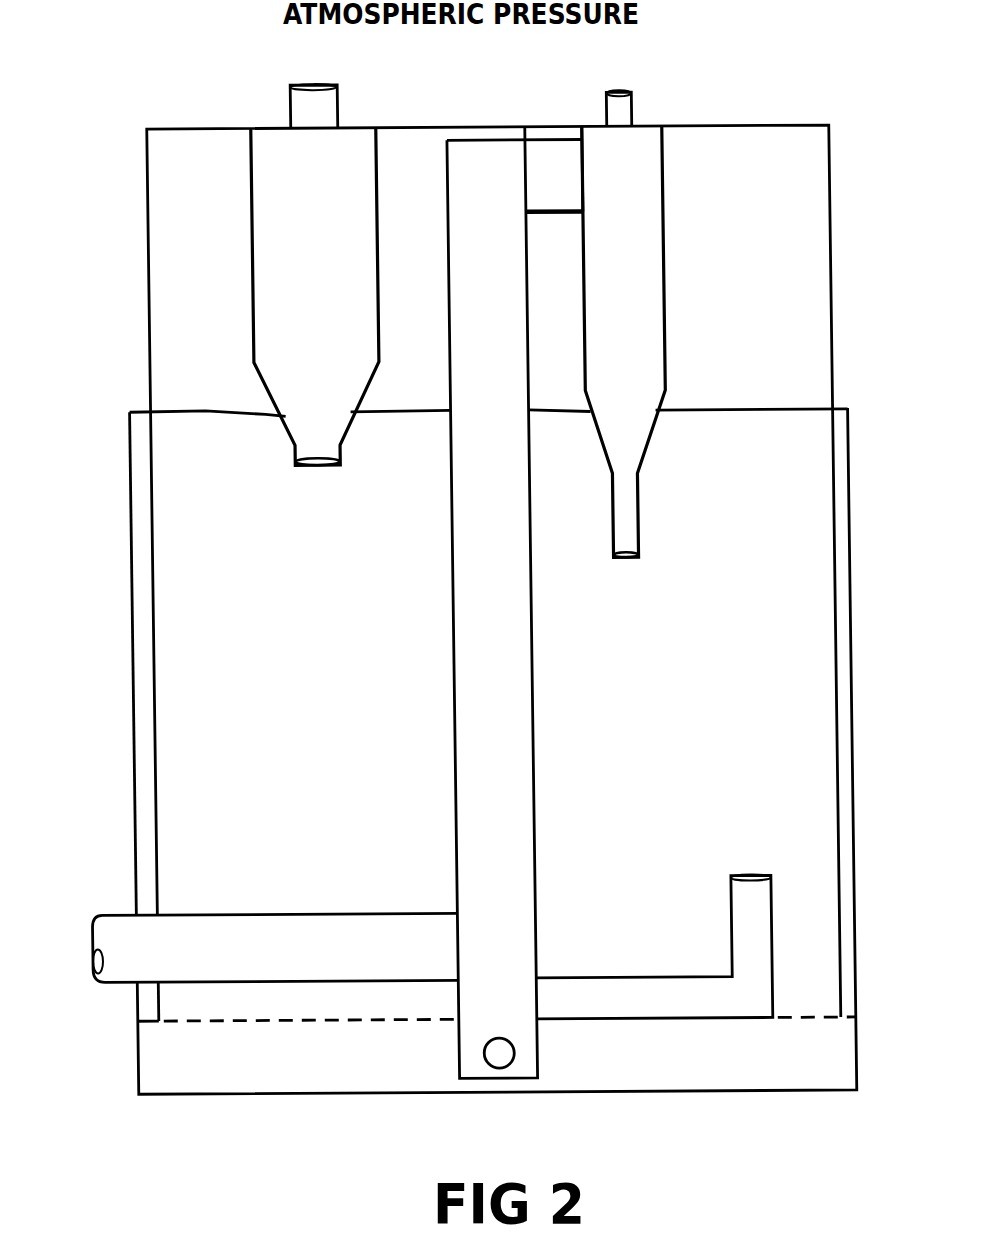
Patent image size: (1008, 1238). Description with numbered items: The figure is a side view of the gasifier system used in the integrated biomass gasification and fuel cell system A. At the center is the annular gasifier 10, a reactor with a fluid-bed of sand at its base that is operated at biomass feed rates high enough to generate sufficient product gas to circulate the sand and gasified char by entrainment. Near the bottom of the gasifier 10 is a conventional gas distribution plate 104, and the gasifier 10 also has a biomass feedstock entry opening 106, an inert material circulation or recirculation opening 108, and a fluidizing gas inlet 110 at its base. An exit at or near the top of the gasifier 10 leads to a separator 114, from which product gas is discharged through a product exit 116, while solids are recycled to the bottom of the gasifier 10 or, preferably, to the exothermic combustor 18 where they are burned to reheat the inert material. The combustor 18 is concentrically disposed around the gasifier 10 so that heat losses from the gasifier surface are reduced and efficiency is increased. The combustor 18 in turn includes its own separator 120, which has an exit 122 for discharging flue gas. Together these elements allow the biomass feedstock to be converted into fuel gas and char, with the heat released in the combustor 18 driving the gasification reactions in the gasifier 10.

The integrated biomass gasification and fuel cell system A is at (124, 141).
The gasifier 10 is at (518, 683).
The combustor 18 is at (831, 683).
The gas distribution plate 104 is at (352, 1022).
The biomass feedstock entry opening 106 is at (343, 945).
The inert material circulation opening 108 is at (745, 874).
The fluidizing gas inlet 110 is at (522, 1052).
The separator 114 is at (636, 268).
The product exit 116 is at (557, 162).
The separator 120 is at (285, 268).
The exit 122 is at (315, 92).